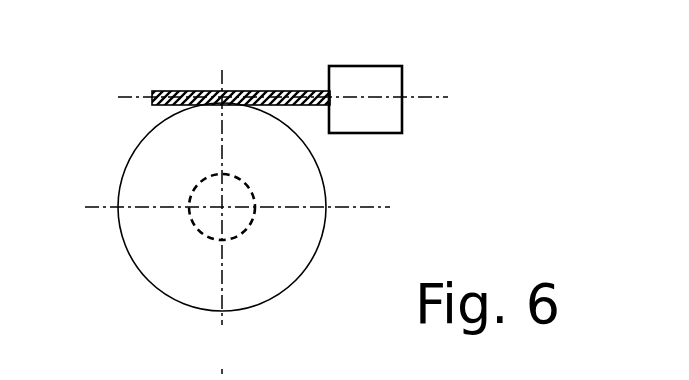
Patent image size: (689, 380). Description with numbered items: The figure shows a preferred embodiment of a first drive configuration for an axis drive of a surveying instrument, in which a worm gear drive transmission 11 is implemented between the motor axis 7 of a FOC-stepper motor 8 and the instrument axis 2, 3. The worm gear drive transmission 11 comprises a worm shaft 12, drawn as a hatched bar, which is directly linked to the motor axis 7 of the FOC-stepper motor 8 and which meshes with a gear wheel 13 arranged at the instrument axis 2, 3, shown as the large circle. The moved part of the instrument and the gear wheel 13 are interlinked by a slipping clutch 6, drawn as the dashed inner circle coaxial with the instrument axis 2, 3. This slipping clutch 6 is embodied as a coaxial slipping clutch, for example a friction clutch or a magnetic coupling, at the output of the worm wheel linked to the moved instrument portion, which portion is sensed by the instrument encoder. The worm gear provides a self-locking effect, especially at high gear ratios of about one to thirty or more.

The worm gear drive transmission 11 is at (270, 201).
The worm shaft 12 is at (248, 90).
The FOC-stepper motor 8 is at (379, 78).
The motor axis 7 is at (425, 93).
The gear wheel 13 is at (327, 173).
The slipping clutch 6 is at (253, 217).
The instrument axis 2 is at (240, 222).
The instrument axis 3 is at (223, 208).